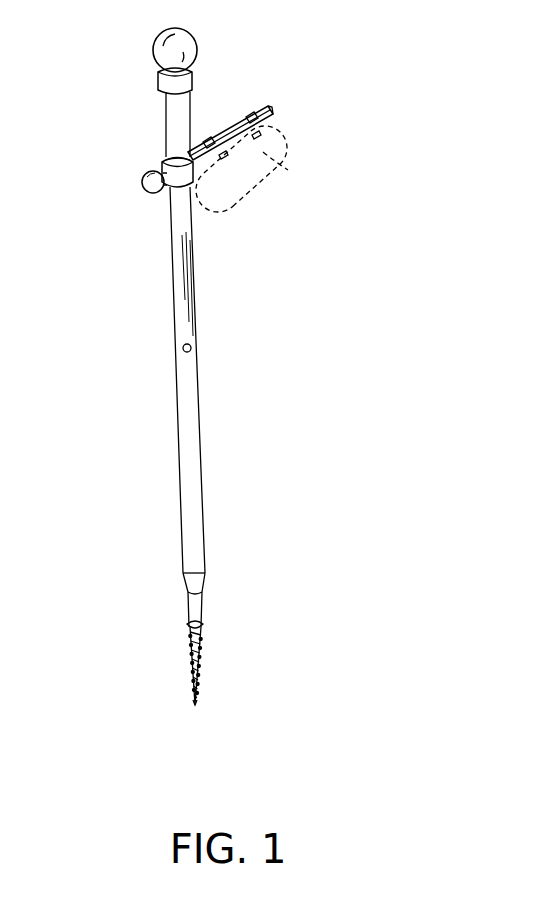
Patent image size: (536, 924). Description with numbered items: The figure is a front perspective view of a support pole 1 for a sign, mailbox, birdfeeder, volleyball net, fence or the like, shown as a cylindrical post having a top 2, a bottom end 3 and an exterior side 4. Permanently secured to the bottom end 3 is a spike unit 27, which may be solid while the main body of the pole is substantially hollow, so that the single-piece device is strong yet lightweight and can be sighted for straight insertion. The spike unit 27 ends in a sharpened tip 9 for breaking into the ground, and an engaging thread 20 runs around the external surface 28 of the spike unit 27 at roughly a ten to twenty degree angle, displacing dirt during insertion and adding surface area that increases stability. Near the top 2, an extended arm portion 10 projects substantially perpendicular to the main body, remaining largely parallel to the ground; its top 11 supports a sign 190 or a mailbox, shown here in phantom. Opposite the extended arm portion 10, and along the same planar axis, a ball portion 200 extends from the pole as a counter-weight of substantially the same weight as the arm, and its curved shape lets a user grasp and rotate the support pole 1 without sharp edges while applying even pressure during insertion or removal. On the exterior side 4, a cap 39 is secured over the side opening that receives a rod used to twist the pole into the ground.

The support pole 1 is at (170, 270).
The top 2 is at (195, 88).
The bottom end 3 is at (192, 573).
The exterior side 4 is at (192, 388).
The sharpened tip 9 is at (196, 705).
The extended arm portion 10 is at (228, 123).
The top 11 is at (272, 115).
The engaging thread 20 is at (200, 663).
The spike unit 27 is at (202, 611).
The external surface 28 is at (192, 602).
The cap 39 is at (191, 346).
The sign 190 is at (288, 170).
The ball portion 200 is at (145, 178).